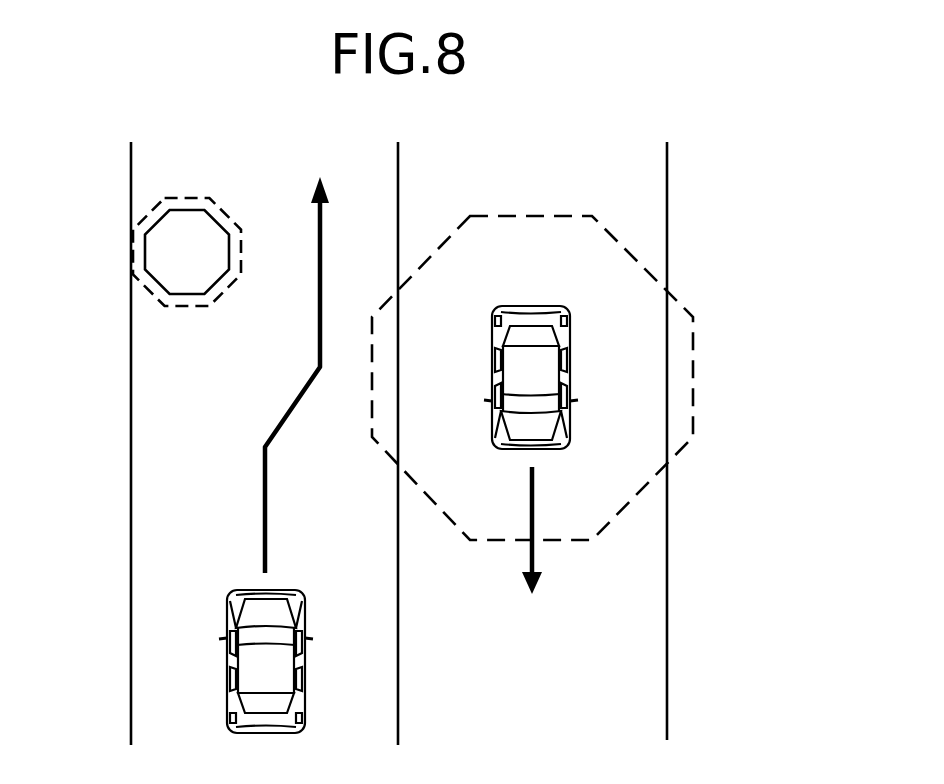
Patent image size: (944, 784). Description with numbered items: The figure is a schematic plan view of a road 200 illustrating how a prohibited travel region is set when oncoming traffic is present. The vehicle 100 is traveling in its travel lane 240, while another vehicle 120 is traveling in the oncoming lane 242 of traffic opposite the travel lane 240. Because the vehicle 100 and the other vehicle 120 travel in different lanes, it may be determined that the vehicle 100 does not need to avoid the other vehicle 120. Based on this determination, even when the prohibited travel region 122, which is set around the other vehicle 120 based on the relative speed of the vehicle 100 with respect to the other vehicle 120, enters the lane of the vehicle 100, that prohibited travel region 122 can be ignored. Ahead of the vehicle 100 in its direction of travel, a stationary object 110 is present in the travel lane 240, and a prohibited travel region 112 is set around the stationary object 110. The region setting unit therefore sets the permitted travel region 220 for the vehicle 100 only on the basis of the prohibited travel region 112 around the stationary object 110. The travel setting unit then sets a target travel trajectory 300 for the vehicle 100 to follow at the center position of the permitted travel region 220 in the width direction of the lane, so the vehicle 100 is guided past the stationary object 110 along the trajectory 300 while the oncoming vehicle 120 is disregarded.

The vehicle 100 is at (227, 660).
The stationary object 110 is at (145, 252).
The prohibited travel region 112 is at (152, 301).
The other vehicle 120 is at (571, 380).
The prohibited travel region 122 is at (693, 389).
The road 200 is at (386, 428).
The permitted travel region 220 is at (352, 232).
The travel lane 240 is at (152, 509).
The oncoming lane 242 is at (637, 662).
The target travel trajectory 300 is at (317, 222).